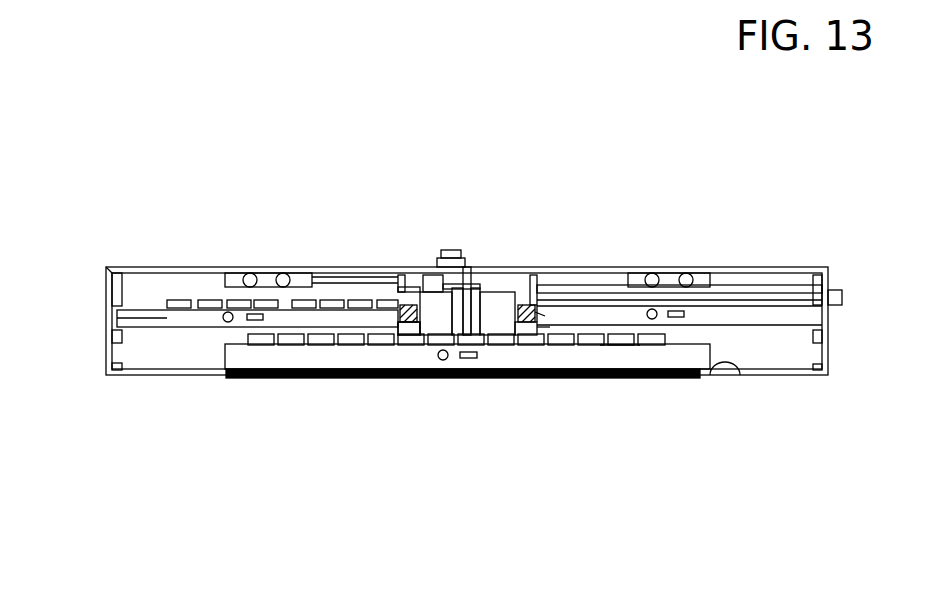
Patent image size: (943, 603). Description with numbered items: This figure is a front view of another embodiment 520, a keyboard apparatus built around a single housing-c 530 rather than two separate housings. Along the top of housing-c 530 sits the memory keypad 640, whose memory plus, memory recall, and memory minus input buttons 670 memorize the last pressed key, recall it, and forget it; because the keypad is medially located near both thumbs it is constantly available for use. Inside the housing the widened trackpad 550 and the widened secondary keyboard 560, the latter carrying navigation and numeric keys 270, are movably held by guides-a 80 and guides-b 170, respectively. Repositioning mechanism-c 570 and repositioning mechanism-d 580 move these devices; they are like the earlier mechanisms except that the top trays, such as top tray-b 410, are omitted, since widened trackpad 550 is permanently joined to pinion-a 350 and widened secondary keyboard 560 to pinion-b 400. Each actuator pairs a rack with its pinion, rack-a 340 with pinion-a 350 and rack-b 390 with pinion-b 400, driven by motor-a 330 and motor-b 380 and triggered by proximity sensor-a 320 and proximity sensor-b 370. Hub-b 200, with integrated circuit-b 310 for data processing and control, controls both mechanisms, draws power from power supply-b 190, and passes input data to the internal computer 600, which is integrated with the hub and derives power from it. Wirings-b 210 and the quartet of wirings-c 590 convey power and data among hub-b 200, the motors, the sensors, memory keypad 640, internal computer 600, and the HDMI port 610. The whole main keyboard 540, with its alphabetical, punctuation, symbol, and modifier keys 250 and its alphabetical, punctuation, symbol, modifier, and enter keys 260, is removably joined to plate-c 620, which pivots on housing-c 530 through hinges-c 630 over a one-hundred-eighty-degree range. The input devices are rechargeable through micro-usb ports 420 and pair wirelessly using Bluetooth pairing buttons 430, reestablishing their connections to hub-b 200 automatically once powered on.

The guides-a 80 is at (538, 278).
The guides-b 170 is at (112, 288).
The power supply-b 190 is at (428, 322).
The hub-b 200 is at (418, 284).
The wirings-b 210 is at (330, 278).
The alphabetical, punctuation, symbol, and modifier keys 250 is at (548, 327).
The alphabetical, punctuation, symbol, modifier, and enter keys 260 is at (283, 340).
The navigation and numeric keys 270 is at (162, 296).
The integrated circuit-b 310 is at (430, 288).
The proximity sensor-a 320 is at (632, 278).
The motor-a 330 is at (522, 324).
The rack-a 340 is at (538, 306).
The pinion-a 350 is at (620, 346).
The proximity sensor-b 370 is at (263, 275).
The motor-b 380 is at (410, 336).
The rack-b 390 is at (404, 322).
The pinion-b 400 is at (400, 312).
The top tray-b 410 is at (117, 318).
The micro-usb ports 420 is at (228, 312).
The Bluetooth pairing buttons 430 is at (248, 314).
The another embodiment 520 is at (485, 103).
The housing-c 530 is at (107, 268).
The whole main keyboard 540 is at (237, 355).
The widened trackpad 550 is at (773, 317).
The widened secondary keyboard 560 is at (167, 318).
The repositioning mechanism-c 570 is at (532, 523).
The repositioning mechanism-d 580 is at (410, 523).
The wirings-c 590 is at (490, 286).
The internal computer 600 is at (468, 346).
The HDMI port 610 is at (842, 295).
The plate-c 620 is at (740, 373).
The hinges-c 630 is at (542, 316).
The memory keypad 640 is at (478, 288).
The memory plus, memory recall, and memory minus input buttons 670 is at (464, 239).